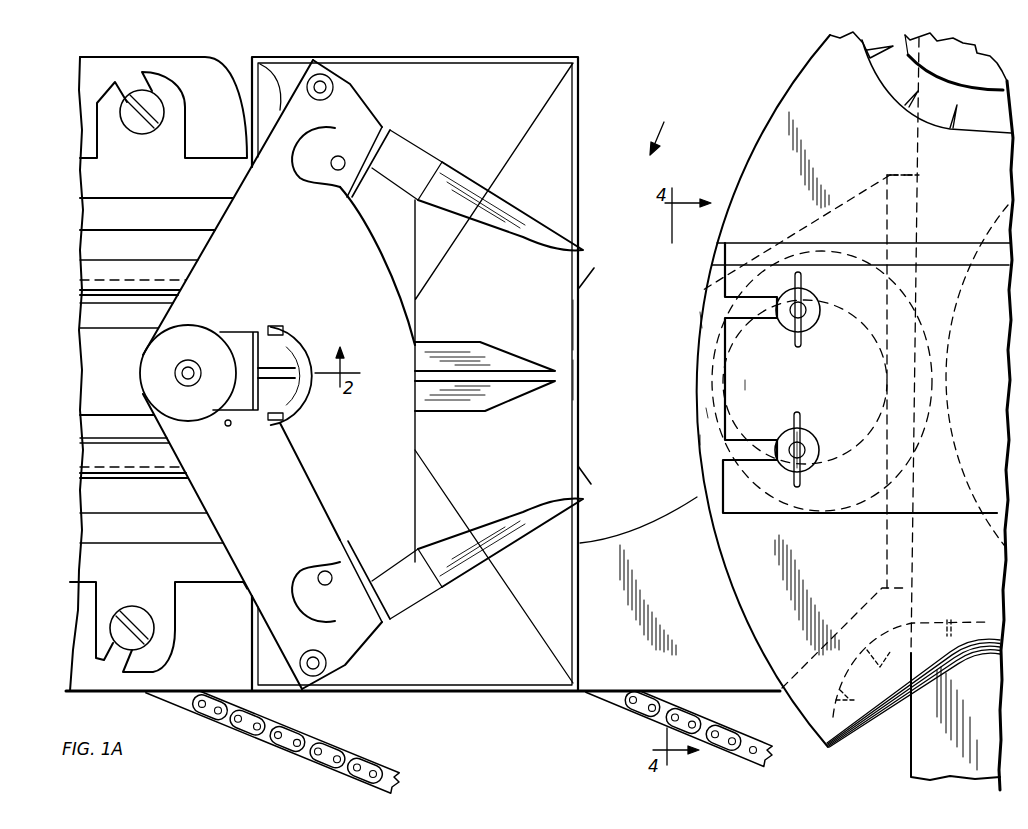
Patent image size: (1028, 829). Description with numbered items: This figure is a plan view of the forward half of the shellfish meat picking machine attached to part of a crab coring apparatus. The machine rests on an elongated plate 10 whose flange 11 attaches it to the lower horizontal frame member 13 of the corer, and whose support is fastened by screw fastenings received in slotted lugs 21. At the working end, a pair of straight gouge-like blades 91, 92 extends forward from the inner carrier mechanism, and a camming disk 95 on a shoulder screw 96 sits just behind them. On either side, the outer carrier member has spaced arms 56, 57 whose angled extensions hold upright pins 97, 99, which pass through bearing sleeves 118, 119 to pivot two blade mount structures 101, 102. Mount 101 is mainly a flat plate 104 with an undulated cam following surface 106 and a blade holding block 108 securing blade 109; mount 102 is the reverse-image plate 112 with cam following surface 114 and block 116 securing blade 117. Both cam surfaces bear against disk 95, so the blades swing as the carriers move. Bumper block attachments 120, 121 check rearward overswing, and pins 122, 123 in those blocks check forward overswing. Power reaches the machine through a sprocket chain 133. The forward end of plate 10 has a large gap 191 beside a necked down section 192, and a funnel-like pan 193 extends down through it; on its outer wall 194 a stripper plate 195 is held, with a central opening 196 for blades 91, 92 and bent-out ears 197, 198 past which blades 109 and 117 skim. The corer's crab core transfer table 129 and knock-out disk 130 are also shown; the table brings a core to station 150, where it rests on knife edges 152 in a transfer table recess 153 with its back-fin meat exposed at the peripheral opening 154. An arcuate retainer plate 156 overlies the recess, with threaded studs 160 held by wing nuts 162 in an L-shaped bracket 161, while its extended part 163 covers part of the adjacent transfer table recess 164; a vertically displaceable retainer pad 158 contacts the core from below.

The elongated plate 10 is at (106, 81).
The flange 11 is at (903, 218).
The lower horizontal frame member 13 is at (922, 81).
The slotted lugs 21 is at (173, 128).
The arm 56 is at (280, 327).
The arm 57 is at (284, 418).
The gouge-like blade 91 is at (455, 343).
The gouge-like blade 92 is at (455, 410).
The camming disk 95 is at (152, 372).
The shoulder screw 96 is at (199, 360).
The upright pin 97 is at (333, 87).
The upright pin 99 is at (317, 674).
The blade mount structure 101 is at (378, 242).
The blade mount structure 102 is at (240, 565).
The flat plate 104 is at (292, 259).
The cam following surface 106 is at (302, 352).
The blade holding block 108 is at (413, 593).
The blade 109 is at (513, 533).
The flat plate 112 is at (278, 509).
The cam following surface 114 is at (230, 425).
The blade holding block 116 is at (423, 153).
The blade 117 is at (517, 233).
The bearing sleeve 118 is at (316, 97).
The bearing sleeve 119 is at (314, 651).
The bumper block attachment 120 is at (380, 107).
The bumper block attachment 121 is at (357, 623).
The pin 122 is at (345, 150).
The pin 123 is at (330, 584).
The crab core transfer table 129 is at (762, 138).
The core knock-out disk 130 is at (983, 85).
The sprocket chain 133 is at (375, 763).
The station 150 is at (698, 355).
The knife edges 152 is at (885, 290).
The transfer table recess 153 is at (698, 440).
The peripheral opening 154 is at (708, 413).
The arcuate retainer plate 156 is at (699, 320).
The retainer pad 158 is at (745, 385).
The threaded studs 160 is at (800, 447).
The L-shaped bracket 161 is at (942, 503).
The wing nuts 162 is at (808, 320).
The extended part 163 is at (812, 712).
The transfer table recess 164 is at (860, 736).
The gap 191 is at (667, 126).
The necked down section 192 is at (610, 537).
The funnel-like pan 193 is at (579, 168).
The outer wall 194 is at (560, 622).
The stripper plate 195 is at (580, 325).
The central opening 196 is at (580, 378).
The bent-out ear 197 is at (588, 472).
The bent-out ear 198 is at (594, 272).